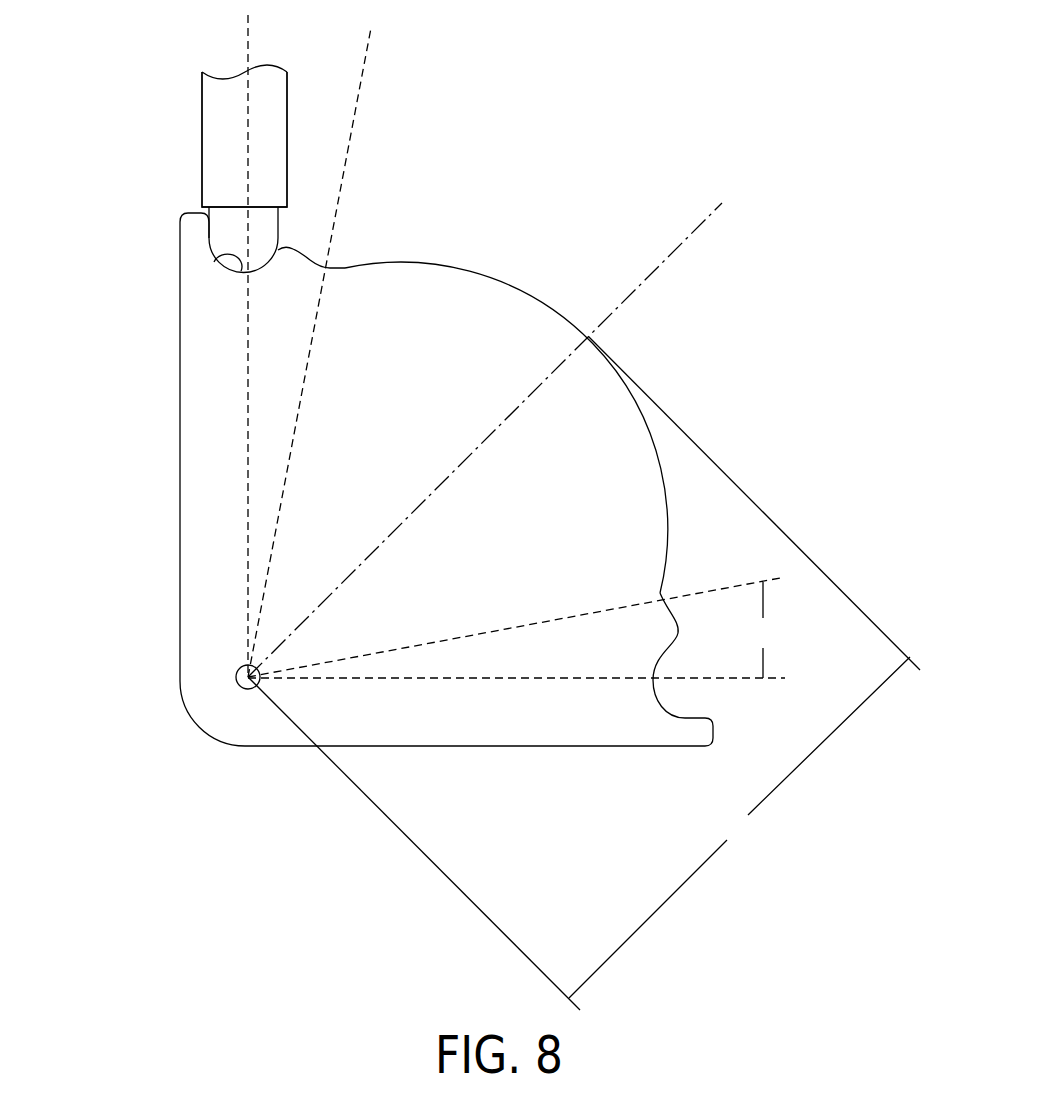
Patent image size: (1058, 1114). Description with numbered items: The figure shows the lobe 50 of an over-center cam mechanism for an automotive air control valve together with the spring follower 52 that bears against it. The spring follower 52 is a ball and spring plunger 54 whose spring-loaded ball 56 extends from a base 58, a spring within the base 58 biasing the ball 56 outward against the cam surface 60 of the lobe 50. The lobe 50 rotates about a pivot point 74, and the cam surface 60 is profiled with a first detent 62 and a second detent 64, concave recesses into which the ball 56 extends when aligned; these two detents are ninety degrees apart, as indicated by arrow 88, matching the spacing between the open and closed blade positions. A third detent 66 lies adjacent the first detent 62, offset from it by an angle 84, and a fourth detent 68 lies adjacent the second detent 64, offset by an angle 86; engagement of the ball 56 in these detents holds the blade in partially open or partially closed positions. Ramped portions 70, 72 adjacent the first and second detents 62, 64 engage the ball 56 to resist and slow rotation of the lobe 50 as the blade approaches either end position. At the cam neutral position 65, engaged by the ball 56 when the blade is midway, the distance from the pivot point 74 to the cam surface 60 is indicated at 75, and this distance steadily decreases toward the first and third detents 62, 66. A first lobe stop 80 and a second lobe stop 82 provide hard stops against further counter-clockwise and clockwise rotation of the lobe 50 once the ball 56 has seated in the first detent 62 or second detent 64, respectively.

The lobe 50 is at (157, 542).
The spring follower 52 is at (183, 139).
The ball and spring plunger 54 is at (178, 140).
The spring-loaded ball 56 is at (227, 240).
The base 58 is at (215, 105).
The cam surface 60 is at (392, 258).
The first detent 62 is at (660, 700).
The second detent 64 is at (214, 262).
The cam neutral position 65 is at (593, 337).
The third detent 66 is at (662, 594).
The fourth detent 68 is at (337, 262).
The ramped portion 70 is at (678, 633).
The ramped portion 72 is at (292, 248).
The pivot point 74 is at (237, 683).
The distance from pivot point to cam surface 75 is at (584, 674).
The first lobe stop 80 is at (697, 732).
The second lobe stop 82 is at (195, 227).
The angle 84 is at (767, 630).
The angle 86 is at (248, 34).
The arrow 88 is at (248, 557).